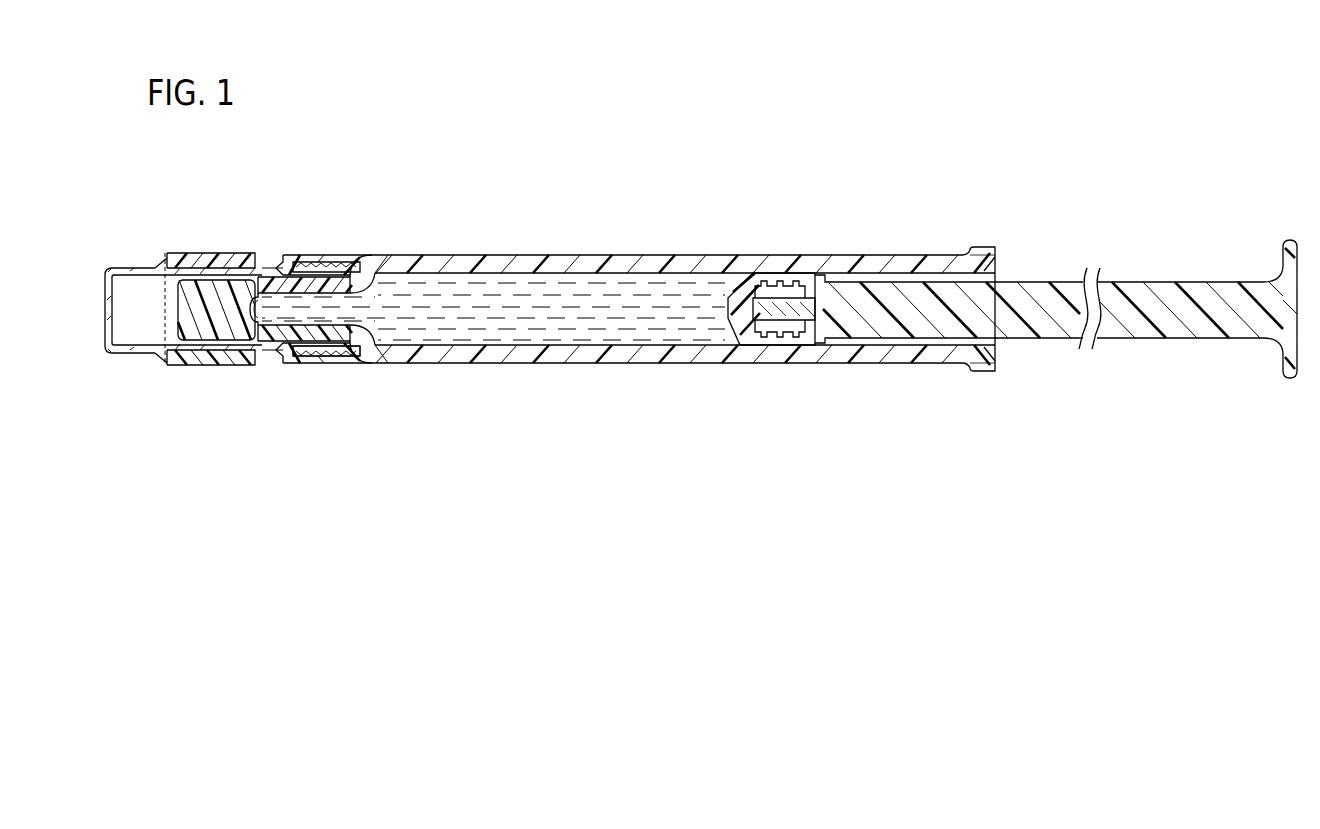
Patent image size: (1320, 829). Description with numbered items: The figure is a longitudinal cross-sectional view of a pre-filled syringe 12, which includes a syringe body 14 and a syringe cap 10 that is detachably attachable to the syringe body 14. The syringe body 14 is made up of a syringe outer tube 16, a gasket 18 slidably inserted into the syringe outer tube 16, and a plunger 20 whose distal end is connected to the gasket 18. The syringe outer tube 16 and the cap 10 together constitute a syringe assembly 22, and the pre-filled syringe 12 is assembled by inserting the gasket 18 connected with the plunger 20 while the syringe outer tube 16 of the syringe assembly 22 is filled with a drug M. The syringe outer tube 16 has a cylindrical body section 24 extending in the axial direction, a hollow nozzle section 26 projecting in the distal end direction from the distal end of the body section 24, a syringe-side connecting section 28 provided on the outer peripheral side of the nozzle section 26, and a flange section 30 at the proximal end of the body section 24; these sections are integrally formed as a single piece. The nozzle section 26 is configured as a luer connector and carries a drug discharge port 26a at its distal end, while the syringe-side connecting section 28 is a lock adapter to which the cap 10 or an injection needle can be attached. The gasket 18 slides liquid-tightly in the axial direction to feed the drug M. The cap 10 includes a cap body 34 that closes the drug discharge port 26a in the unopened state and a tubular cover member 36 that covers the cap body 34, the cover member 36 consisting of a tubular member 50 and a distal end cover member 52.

The pre-filled syringe 12 is at (357, 128).
The syringe assembly 22 is at (333, 192).
The syringe cap 10 is at (253, 240).
The syringe outer tube 16 is at (346, 242).
The cover member 36 is at (210, 212).
The distal end cover member 52 is at (138, 268).
The tubular member 50 is at (197, 253).
The cap body 34 is at (205, 335).
The drug discharge port 26a is at (247, 325).
The nozzle section 26 is at (294, 333).
The syringe-side connecting section 28 is at (337, 357).
The drug M is at (455, 285).
The body section 24 is at (522, 268).
The gasket 18 is at (746, 290).
The syringe body 14 is at (813, 224).
The flange section 30 is at (977, 248).
The plunger 20 is at (1131, 280).